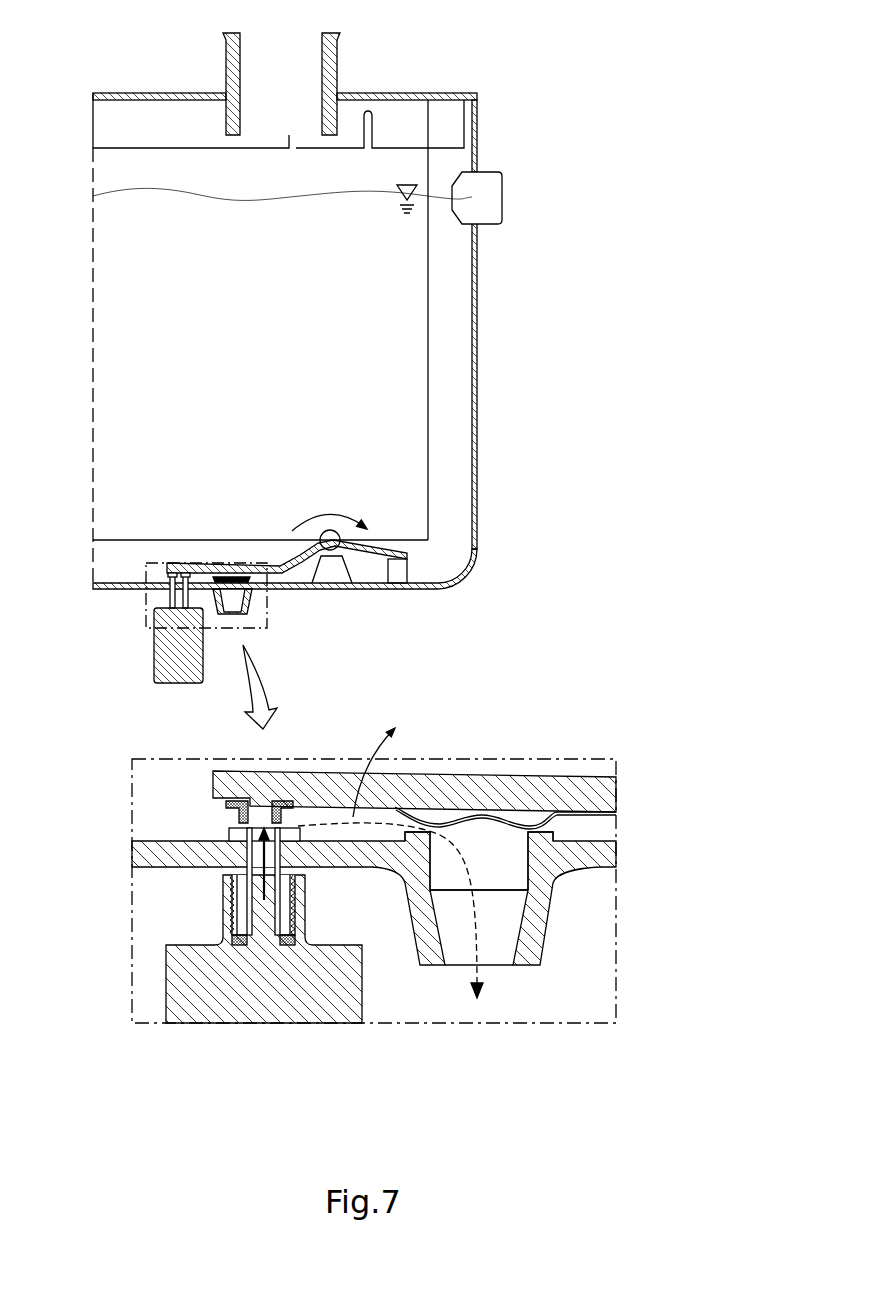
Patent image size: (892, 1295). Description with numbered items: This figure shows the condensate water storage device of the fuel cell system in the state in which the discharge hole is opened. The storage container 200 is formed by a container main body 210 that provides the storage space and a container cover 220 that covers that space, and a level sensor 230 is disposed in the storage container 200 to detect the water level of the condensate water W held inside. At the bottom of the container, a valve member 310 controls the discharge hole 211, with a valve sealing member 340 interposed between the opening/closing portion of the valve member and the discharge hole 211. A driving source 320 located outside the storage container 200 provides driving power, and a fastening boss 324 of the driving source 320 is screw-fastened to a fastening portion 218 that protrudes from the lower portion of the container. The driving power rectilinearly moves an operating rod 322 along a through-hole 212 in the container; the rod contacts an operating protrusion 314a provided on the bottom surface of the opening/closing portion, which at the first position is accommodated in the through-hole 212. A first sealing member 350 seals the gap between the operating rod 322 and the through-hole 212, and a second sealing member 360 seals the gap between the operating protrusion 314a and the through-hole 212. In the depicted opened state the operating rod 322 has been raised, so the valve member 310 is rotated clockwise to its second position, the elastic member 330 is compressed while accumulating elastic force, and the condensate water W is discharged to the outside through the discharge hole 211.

The storage container 200 is at (567, 62).
The container main body 210 is at (478, 127).
The discharge hole 211 is at (223, 587).
The through-hole 212 is at (245, 862).
The fastening portion 218 is at (287, 913).
The container cover 220 is at (413, 92).
The level sensor 230 is at (502, 197).
The valve member 310 is at (375, 545).
The operating protrusion 314a is at (262, 815).
The driving source 320 is at (172, 657).
The operating rod 322 is at (258, 918).
The fastening boss 324 is at (232, 888).
The elastic member 330 is at (397, 578).
The valve sealing member 340 is at (503, 822).
The first sealing member 350 is at (238, 945).
The second sealing member 360 is at (353, 817).
The condensate water W is at (112, 192).